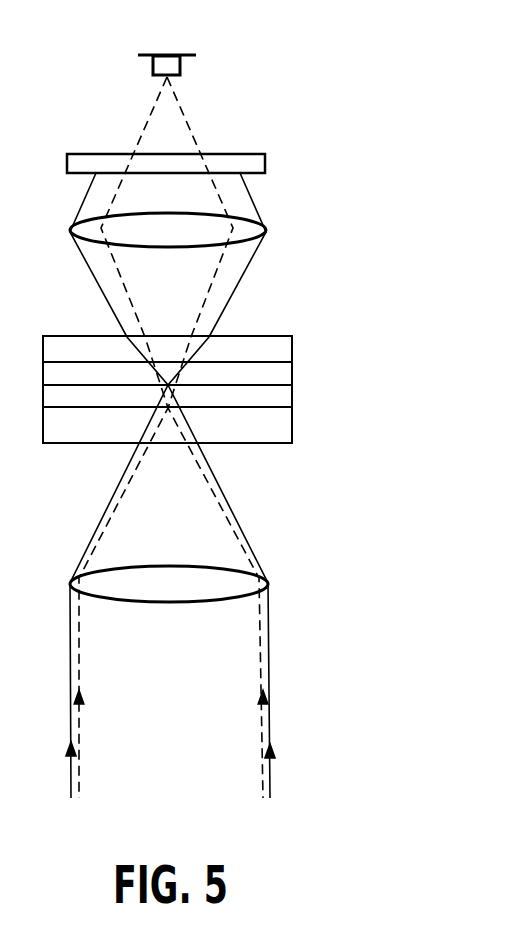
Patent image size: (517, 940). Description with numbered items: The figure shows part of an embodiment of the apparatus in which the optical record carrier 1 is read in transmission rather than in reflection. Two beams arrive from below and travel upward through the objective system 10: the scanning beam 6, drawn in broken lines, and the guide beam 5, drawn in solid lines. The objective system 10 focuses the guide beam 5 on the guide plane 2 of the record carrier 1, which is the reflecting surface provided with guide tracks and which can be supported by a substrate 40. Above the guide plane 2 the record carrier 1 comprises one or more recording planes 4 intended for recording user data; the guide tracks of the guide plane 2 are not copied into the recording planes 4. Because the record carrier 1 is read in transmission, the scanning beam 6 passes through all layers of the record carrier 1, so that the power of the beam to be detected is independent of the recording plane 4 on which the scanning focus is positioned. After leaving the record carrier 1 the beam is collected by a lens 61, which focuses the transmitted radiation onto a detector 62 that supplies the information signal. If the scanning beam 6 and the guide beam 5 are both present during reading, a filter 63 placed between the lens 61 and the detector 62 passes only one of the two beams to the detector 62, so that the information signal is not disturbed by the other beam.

The detector 62 is at (192, 58).
The filter 63 is at (203, 162).
The lens 61 is at (266, 229).
The optical record carrier 1 is at (321, 327).
The recording plane 4 is at (293, 362).
The guide plane 2 is at (288, 407).
The substrate 40 is at (275, 429).
The objective system 10 is at (268, 582).
The scanning beam 6 is at (78, 664).
The guide beam 5 is at (271, 680).